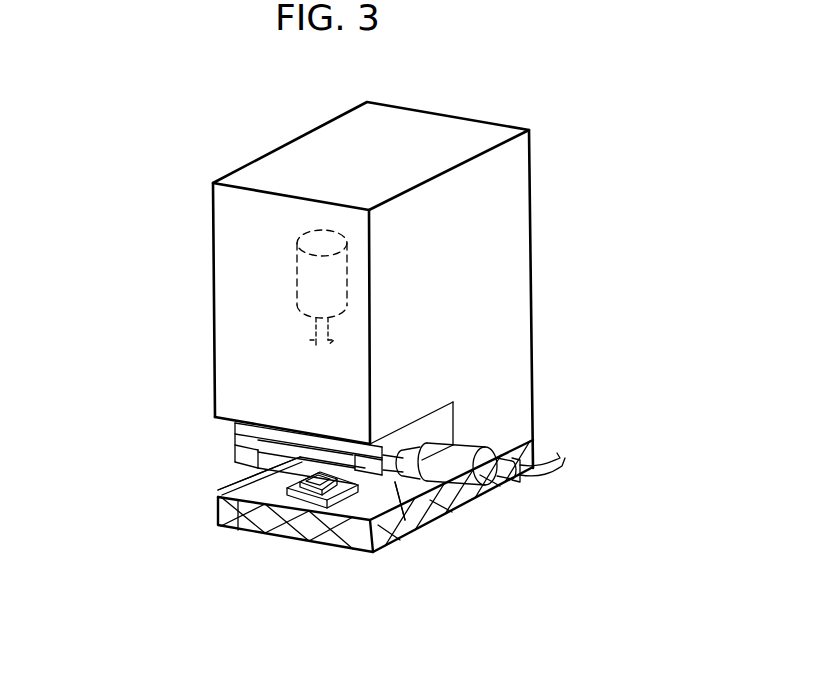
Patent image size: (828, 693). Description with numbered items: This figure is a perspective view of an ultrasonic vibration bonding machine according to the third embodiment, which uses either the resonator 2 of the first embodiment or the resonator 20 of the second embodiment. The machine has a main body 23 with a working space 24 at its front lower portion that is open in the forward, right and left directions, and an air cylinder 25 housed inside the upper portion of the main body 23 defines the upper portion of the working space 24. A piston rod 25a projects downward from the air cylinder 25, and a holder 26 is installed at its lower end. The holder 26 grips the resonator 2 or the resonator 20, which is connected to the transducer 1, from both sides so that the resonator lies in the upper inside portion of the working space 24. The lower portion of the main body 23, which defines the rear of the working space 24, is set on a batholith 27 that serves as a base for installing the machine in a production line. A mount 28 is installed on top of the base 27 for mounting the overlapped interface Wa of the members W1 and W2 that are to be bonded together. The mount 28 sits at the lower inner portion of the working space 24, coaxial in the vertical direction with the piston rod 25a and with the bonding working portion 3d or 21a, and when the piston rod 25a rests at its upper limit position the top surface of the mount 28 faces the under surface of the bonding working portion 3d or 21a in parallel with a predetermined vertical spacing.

The transducer 1 is at (455, 485).
The resonator 2 is at (395, 482).
The resonator 20 is at (400, 501).
The bonding working portion 3d is at (218, 486).
The bonding working portion 21a is at (259, 473).
The main body 23 is at (537, 318).
The working space 24 is at (235, 456).
The air cylinder 25 is at (297, 265).
The piston rod 25a is at (312, 332).
The holder 26 is at (235, 430).
The batholith 27 is at (218, 525).
The mount 28 is at (238, 533).
The member W1 is at (300, 500).
The member W2 is at (340, 512).
The overlapped interface Wa is at (322, 500).